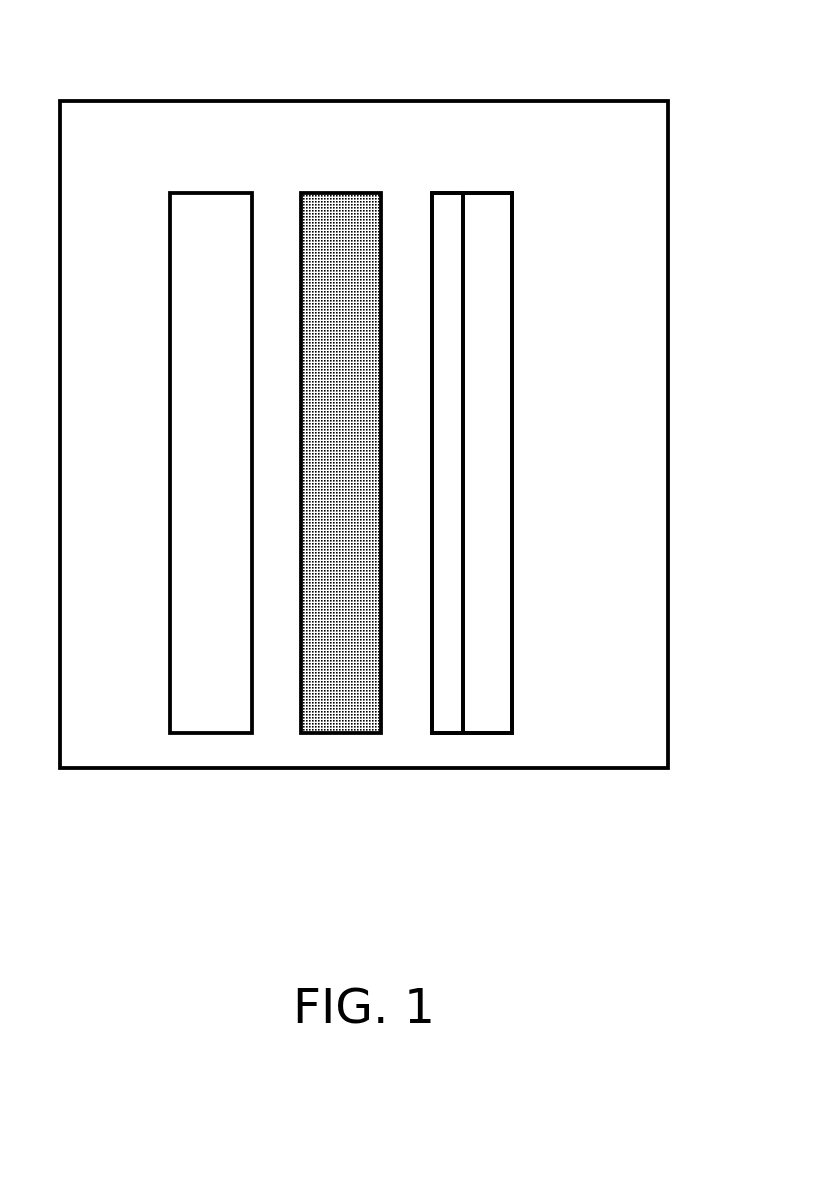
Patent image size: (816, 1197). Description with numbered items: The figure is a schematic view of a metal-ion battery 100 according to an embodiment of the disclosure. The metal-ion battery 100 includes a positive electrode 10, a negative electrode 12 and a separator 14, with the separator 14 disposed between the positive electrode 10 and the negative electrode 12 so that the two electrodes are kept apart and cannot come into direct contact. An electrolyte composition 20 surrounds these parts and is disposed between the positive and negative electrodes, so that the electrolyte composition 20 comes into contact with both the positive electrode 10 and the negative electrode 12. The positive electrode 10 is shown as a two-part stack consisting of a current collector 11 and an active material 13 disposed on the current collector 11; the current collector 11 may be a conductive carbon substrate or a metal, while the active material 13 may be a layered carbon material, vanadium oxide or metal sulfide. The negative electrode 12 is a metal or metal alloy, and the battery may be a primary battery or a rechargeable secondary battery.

The metal-ion battery 100 is at (693, 60).
The electrolyte composition 20 is at (613, 163).
The negative electrode 12 is at (211, 733).
The separator 14 is at (342, 733).
The positive electrode 10 is at (473, 550).
The active material 13 is at (452, 733).
The current collector 11 is at (487, 733).